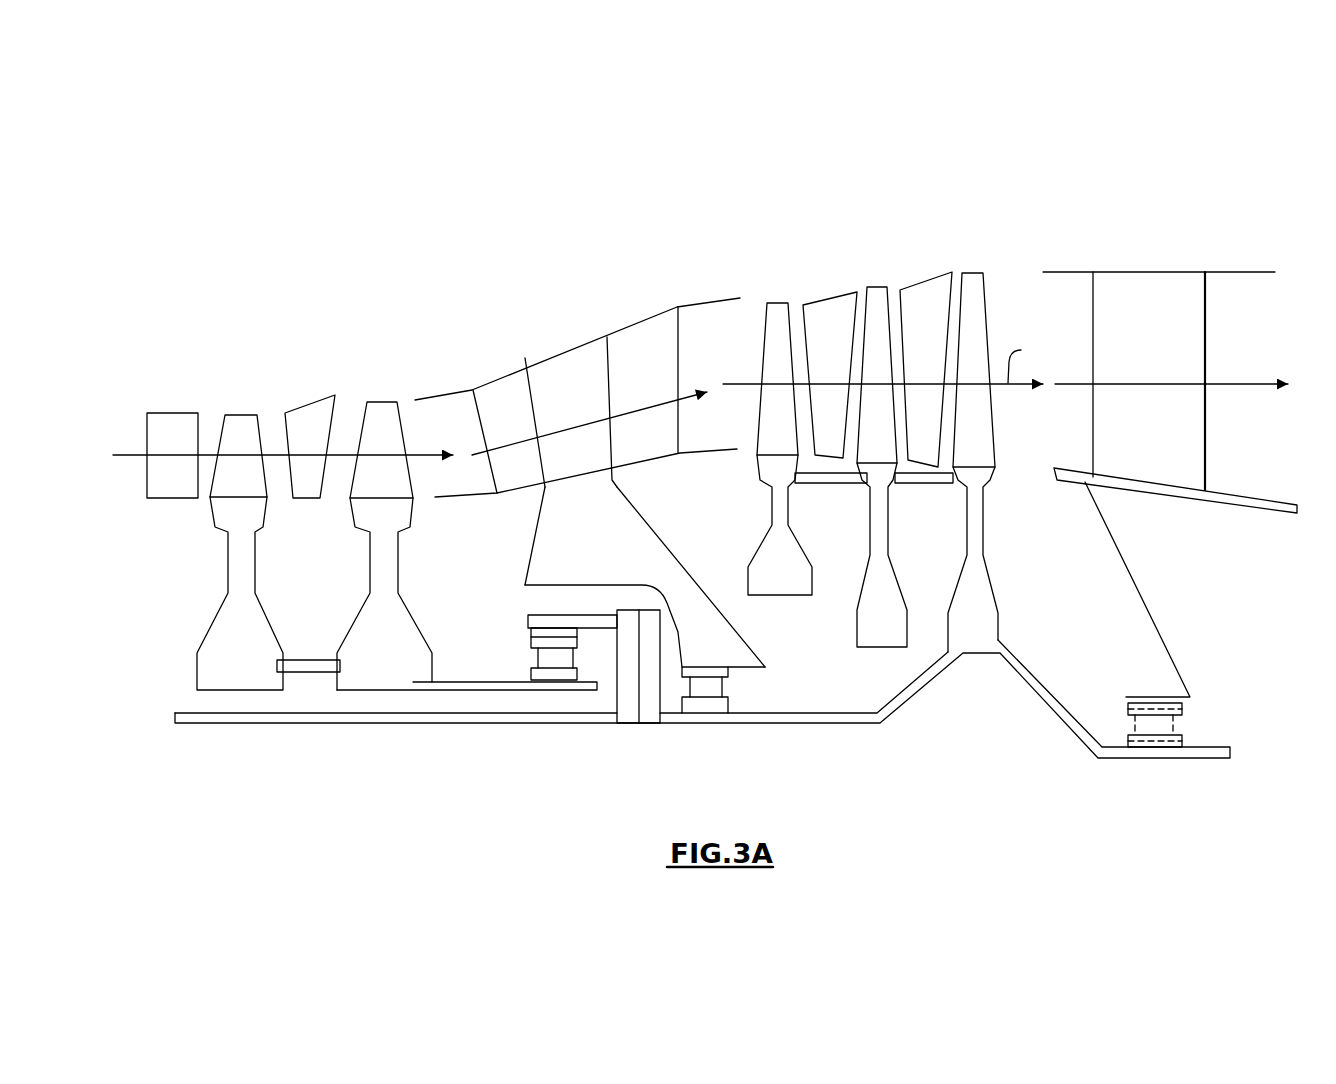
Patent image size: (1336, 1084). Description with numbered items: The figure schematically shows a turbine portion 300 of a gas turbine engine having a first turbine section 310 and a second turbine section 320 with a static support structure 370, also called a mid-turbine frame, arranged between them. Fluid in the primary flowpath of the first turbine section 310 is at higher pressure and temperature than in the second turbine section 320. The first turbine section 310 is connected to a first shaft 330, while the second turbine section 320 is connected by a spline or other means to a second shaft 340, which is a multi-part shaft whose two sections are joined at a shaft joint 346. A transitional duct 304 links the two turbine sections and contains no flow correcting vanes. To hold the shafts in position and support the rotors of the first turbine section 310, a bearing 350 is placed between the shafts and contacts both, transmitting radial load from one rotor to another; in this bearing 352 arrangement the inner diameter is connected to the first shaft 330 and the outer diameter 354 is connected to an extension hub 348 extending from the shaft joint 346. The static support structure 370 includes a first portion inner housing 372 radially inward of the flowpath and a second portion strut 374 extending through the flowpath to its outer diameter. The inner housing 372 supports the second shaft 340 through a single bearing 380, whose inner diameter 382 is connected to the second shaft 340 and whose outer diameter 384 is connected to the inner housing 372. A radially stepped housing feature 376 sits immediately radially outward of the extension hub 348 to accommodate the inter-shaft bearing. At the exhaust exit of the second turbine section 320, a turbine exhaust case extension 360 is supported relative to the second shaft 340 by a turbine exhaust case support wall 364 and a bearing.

The turbine portion 300 is at (751, 191).
The first turbine section 310 is at (289, 351).
The second turbine section 320 is at (875, 268).
The turbine exhaust case extension 360 is at (1185, 287).
The transitional duct 304 is at (505, 403).
The second portion strut 374 is at (595, 407).
The first portion inner housing 372 is at (597, 507).
The static support structure 370 is at (640, 540).
The radially stepped housing feature 376 is at (556, 595).
The extension hub 348 is at (597, 622).
The outer diameter of the bearing 354 is at (545, 634).
The bearing 350 is at (558, 657).
The bearing 352 is at (545, 683).
The first shaft 330 is at (439, 686).
The shaft joint 346 is at (645, 688).
The bearing 380 is at (711, 702).
The inner diameter of the bearing 382 is at (727, 712).
The outer diameter of the bearing 384 is at (712, 665).
The second shaft 340 is at (817, 718).
The turbine exhaust case support wall 364 is at (1145, 600).